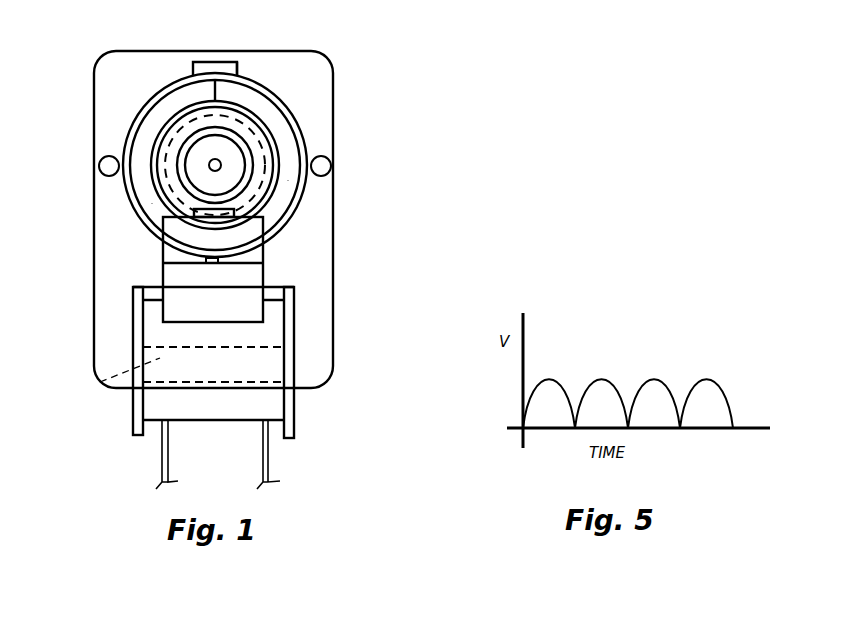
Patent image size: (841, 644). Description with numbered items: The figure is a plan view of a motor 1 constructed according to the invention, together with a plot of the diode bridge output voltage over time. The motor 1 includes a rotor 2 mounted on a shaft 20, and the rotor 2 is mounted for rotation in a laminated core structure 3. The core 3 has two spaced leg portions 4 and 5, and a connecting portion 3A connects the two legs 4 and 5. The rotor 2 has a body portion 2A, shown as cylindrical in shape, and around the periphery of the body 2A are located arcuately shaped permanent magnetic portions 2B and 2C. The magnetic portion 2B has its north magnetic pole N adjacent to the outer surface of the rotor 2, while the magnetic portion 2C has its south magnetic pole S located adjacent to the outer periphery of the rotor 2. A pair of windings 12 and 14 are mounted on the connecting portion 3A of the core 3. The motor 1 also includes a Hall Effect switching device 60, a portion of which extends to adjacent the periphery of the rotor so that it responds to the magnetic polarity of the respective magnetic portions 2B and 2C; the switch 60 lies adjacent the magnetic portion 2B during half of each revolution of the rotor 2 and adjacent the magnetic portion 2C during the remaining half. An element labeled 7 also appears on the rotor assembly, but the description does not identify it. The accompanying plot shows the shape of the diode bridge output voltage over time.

The motor 1 is at (227, 197).
The rotor 2 is at (241, 145).
The body portion 2A is at (259, 90).
The permanent magnetic portion 2B is at (288, 180).
The permanent magnetic portion 2C is at (152, 203).
The laminated core structure 3 is at (334, 250).
The connecting portion 3A is at (100, 382).
The leg portion 4 is at (110, 137).
The leg portion 5 is at (320, 132).
The rotor ring 7 is at (282, 200).
The shaft 20 is at (221, 165).
The Hall Effect switching device 60 is at (213, 259).
The winding 12 is at (258, 370).
The winding 14 is at (278, 364).
The north magnetic pole N is at (133, 192).
The south magnetic pole S is at (297, 127).